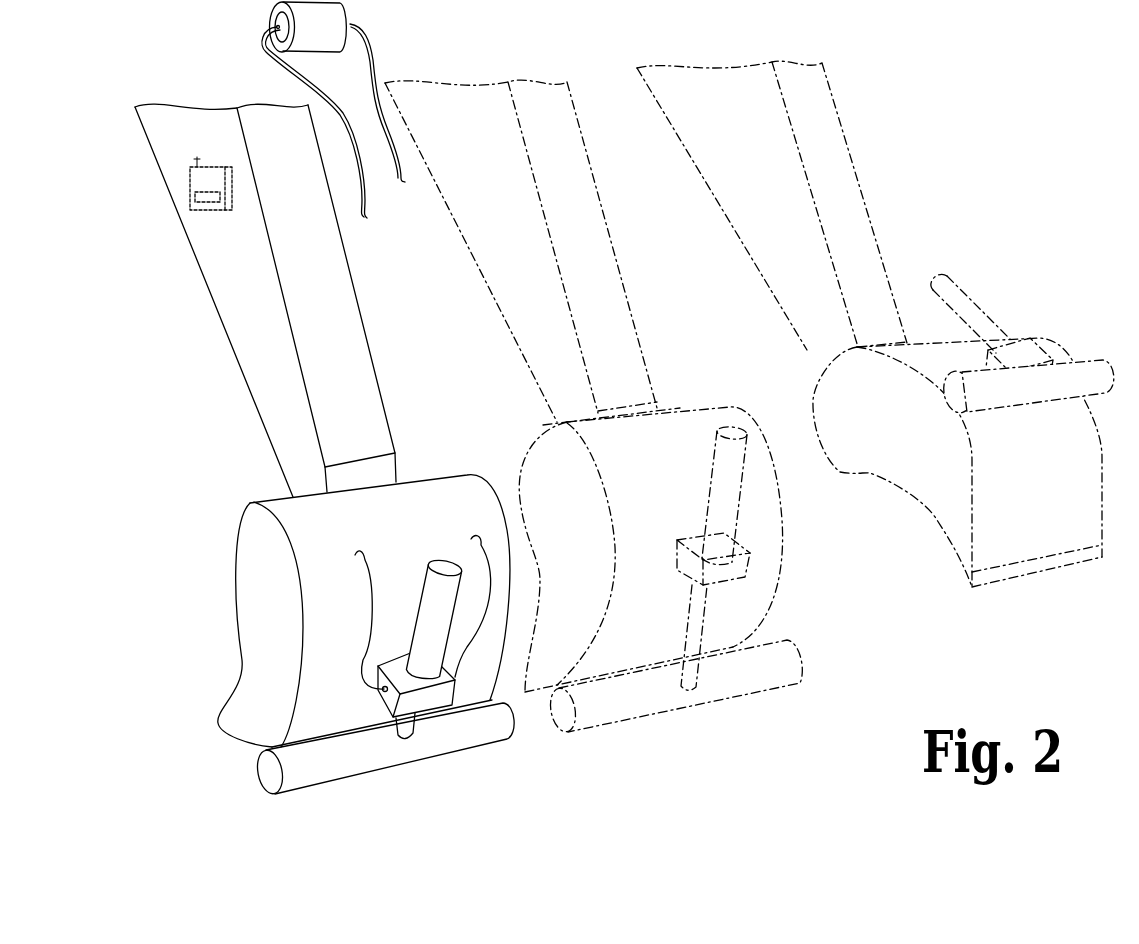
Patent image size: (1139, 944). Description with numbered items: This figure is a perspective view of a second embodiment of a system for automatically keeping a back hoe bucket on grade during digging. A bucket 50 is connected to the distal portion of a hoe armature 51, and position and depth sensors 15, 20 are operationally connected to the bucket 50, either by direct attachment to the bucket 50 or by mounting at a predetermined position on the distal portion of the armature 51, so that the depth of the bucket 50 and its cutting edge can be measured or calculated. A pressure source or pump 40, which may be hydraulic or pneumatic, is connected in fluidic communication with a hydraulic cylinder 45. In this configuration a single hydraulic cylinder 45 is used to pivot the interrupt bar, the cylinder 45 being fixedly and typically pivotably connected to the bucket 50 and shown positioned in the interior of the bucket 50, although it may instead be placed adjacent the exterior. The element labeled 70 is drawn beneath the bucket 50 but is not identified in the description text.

The position sensor 15 is at (158, 183).
The depth sensor 20 is at (190, 192).
The pressure source or pump 40 is at (328, 39).
The hydraulic cylinder 45 is at (408, 733).
The bucket 50 is at (253, 507).
The hoe armature 51 is at (242, 315).
The support bar 70 is at (312, 773).